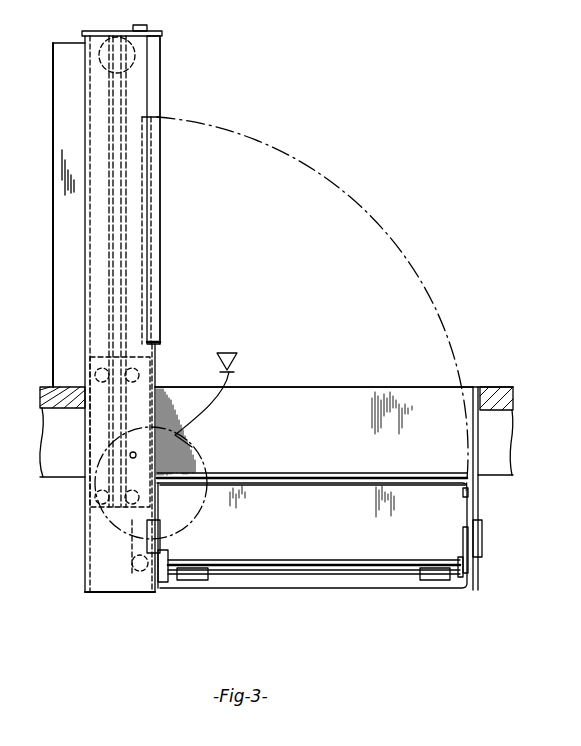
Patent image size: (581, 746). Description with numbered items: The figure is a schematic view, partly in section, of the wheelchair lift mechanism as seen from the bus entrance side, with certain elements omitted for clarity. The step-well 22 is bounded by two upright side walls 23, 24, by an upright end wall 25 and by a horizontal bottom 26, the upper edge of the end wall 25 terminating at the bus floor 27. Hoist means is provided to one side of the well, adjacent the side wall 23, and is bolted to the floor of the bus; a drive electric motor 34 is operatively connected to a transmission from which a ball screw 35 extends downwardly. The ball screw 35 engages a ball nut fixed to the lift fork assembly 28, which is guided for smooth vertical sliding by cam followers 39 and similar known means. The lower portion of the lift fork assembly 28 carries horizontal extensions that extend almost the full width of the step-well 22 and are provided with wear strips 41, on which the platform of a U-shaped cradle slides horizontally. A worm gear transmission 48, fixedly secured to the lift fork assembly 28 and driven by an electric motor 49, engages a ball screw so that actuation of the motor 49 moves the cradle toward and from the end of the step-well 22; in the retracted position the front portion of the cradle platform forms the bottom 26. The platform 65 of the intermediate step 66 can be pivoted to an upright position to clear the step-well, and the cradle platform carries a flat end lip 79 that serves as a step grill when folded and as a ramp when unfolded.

The step-well 22 is at (288, 362).
The side wall 23 is at (148, 27).
The side wall 24 is at (470, 386).
The end wall 25 is at (425, 442).
The bottom 26 is at (330, 564).
The bus floor 27 is at (341, 386).
The lift fork assembly 28 is at (100, 531).
The drive electric motor 34 is at (135, 68).
The ball screw 35 is at (118, 237).
The cam followers 39 is at (95, 508).
The wear strips 41 is at (194, 579).
The worm gear transmission 48 is at (133, 570).
The electric motor 49 is at (128, 543).
The platform 65 is at (341, 473).
The intermediate step 66 is at (276, 473).
The flat end lip 79 is at (394, 563).